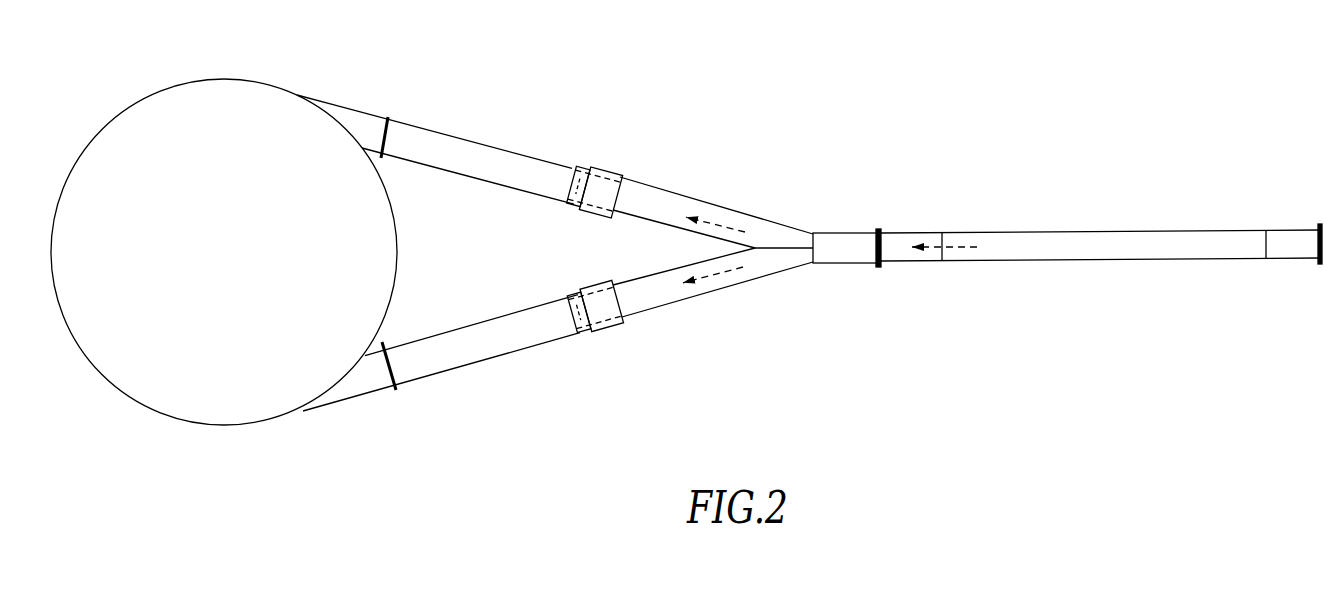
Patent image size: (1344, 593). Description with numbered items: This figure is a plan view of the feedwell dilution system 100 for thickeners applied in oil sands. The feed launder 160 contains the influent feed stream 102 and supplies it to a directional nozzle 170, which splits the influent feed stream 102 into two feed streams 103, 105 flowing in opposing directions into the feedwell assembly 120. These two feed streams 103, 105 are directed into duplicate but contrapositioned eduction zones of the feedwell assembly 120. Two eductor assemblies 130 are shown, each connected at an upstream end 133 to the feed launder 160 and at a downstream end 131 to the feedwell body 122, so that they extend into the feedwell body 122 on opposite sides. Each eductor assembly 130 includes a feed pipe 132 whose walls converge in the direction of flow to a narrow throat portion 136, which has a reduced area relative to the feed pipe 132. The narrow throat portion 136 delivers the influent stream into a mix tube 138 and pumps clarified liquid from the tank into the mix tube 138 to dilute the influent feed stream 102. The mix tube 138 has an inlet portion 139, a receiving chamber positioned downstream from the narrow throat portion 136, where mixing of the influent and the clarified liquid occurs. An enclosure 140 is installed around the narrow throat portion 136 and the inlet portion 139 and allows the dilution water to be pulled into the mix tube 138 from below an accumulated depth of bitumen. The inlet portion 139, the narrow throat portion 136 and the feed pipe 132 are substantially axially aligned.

The feedwell dilution system 100 is at (686, 226).
The influent feed stream 102 is at (960, 246).
The feed stream 103 is at (718, 226).
The feed stream 105 is at (712, 274).
The feedwell assembly 120 is at (224, 226).
The feedwell body 122 is at (118, 115).
The eductor assembly 130 is at (730, 249).
The downstream end 131 is at (298, 94).
The feed pipe 132 is at (677, 196).
The upstream end 133 is at (799, 228).
The narrow throat portion 136 is at (579, 167).
The mix tube 138 is at (438, 231).
The inlet portion 139 is at (572, 210).
The enclosure 140 is at (607, 170).
The feed launder 160 is at (866, 233).
The directional nozzle 170 is at (841, 268).